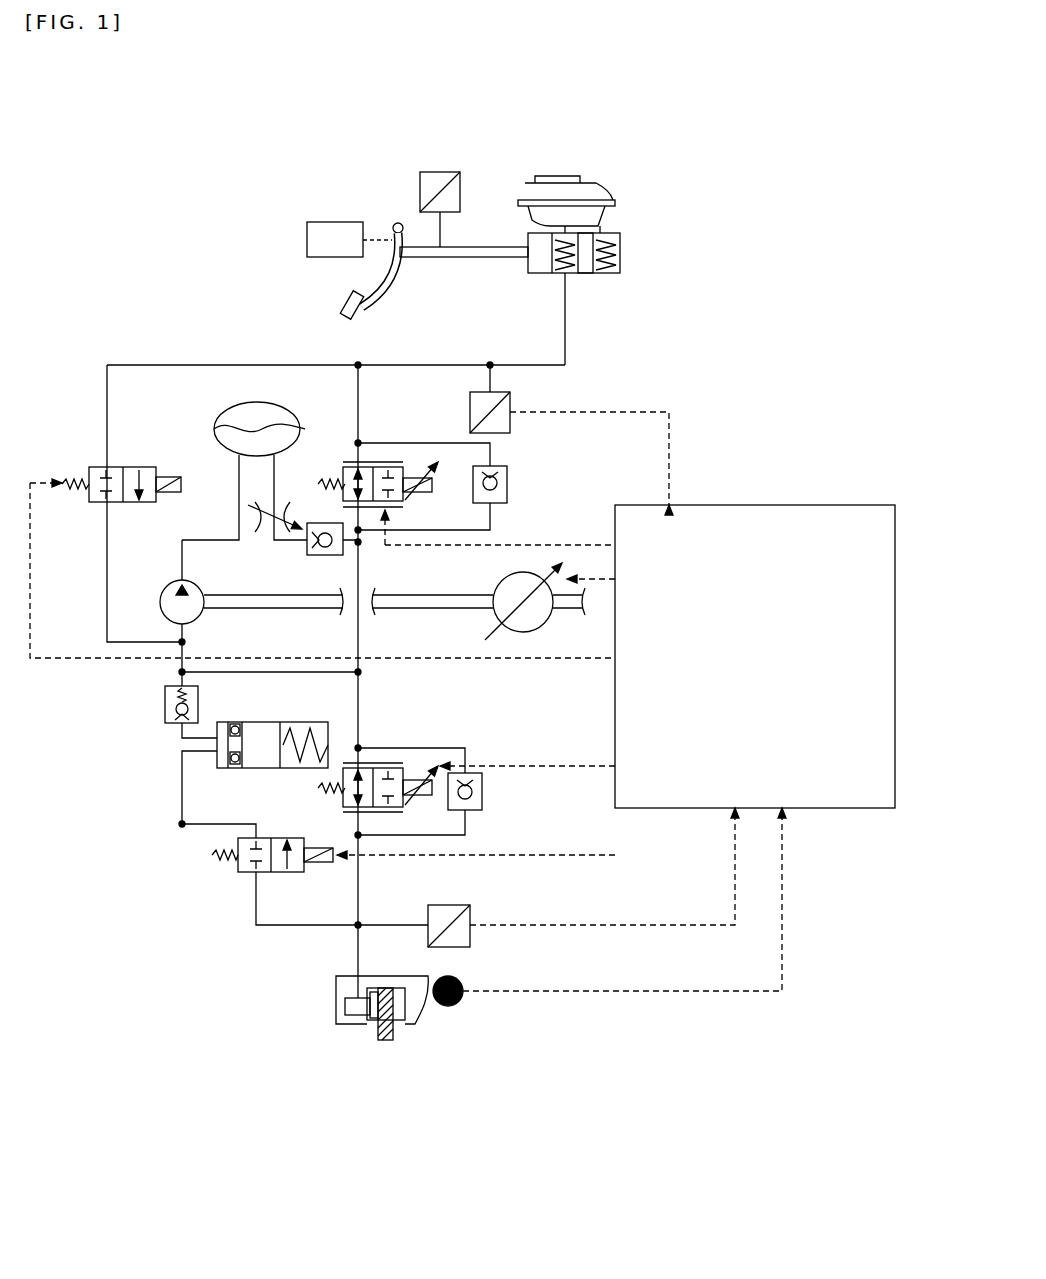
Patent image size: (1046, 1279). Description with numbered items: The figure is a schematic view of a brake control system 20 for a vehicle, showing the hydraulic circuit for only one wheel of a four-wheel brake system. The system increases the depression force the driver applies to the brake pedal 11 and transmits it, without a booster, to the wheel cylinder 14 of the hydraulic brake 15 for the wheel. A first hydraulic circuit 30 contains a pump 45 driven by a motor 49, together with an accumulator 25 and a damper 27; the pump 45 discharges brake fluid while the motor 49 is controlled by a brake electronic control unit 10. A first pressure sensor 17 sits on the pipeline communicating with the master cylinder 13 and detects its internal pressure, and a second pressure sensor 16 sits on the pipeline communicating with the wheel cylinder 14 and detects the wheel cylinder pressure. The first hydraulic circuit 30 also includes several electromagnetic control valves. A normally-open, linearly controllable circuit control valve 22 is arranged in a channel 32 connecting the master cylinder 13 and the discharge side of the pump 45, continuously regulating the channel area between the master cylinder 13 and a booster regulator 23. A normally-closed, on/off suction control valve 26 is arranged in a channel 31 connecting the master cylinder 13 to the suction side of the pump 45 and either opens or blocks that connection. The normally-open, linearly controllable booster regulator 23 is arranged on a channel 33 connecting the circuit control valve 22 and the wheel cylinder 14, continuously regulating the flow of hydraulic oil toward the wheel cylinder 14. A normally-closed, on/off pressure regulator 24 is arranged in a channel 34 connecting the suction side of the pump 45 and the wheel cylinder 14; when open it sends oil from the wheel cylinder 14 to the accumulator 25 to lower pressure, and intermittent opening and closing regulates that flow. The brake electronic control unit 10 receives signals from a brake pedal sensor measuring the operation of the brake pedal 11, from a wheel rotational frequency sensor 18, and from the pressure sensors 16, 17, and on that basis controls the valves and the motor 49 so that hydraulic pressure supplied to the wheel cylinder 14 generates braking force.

The brake electronic control unit 10 is at (817, 505).
The brake pedal 11 is at (343, 300).
The master cylinder 13 is at (622, 249).
The wheel cylinder 14 is at (345, 1017).
The hydraulic brake 15 is at (372, 1045).
The second pressure sensor 16 is at (473, 912).
The first pressure sensor 17 is at (512, 425).
The wheel rotational frequency sensor 18 is at (448, 1009).
The brake control system 20 is at (758, 302).
The circuit control valve 22 is at (342, 468).
The booster regulator 23 is at (343, 800).
The pressure regulator 24 is at (302, 871).
The accumulator 25 is at (264, 721).
The suction control valve 26 is at (130, 466).
The damper 27 is at (217, 418).
The first hydraulic circuit 30 is at (228, 355).
The channel 31 is at (107, 383).
The channel 32 is at (362, 394).
The channel 33 is at (362, 695).
The channel 34 is at (256, 915).
The pump 45 is at (195, 584).
The motor 49 is at (553, 620).